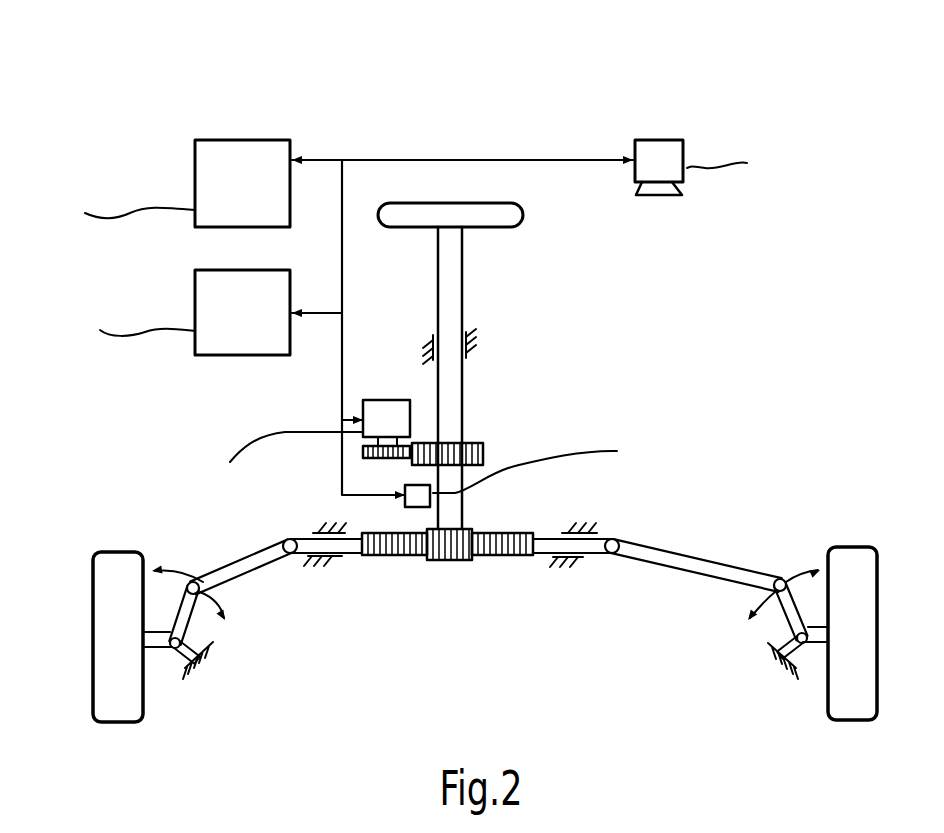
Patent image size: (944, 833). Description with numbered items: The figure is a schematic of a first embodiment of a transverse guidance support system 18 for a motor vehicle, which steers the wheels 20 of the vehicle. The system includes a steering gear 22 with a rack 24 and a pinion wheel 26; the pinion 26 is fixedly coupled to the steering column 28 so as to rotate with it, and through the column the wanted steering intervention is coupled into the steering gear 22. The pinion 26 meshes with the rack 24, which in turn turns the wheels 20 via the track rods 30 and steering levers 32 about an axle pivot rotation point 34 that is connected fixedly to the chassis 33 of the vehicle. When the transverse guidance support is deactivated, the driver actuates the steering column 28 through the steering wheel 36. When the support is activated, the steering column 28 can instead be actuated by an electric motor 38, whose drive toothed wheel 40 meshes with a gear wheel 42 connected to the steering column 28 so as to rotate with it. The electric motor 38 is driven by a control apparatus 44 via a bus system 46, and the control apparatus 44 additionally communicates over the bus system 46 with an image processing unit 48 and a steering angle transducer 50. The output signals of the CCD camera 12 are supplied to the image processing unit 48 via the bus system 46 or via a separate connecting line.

The CCD camera 12 is at (687, 152).
The transverse guidance support system 18 is at (648, 347).
The wheels 20 is at (145, 708).
The steering gear 22 is at (448, 593).
The rack 24 is at (507, 532).
The pinion wheel 26 is at (440, 563).
The steering column 28 is at (458, 390).
The track rods 30 is at (237, 558).
The steering levers 32 is at (190, 618).
The chassis 33 is at (430, 345).
The axle pivot rotation point 34 is at (172, 652).
The steering wheel 36 is at (497, 203).
The electric motor 38 is at (385, 400).
The drive toothed wheel 40 is at (388, 460).
The gear wheel 42 is at (483, 455).
The control apparatus 44 is at (230, 357).
The bus system 46 is at (342, 233).
The image processing unit 48 is at (237, 140).
The steering angle transducer 50 is at (415, 507).